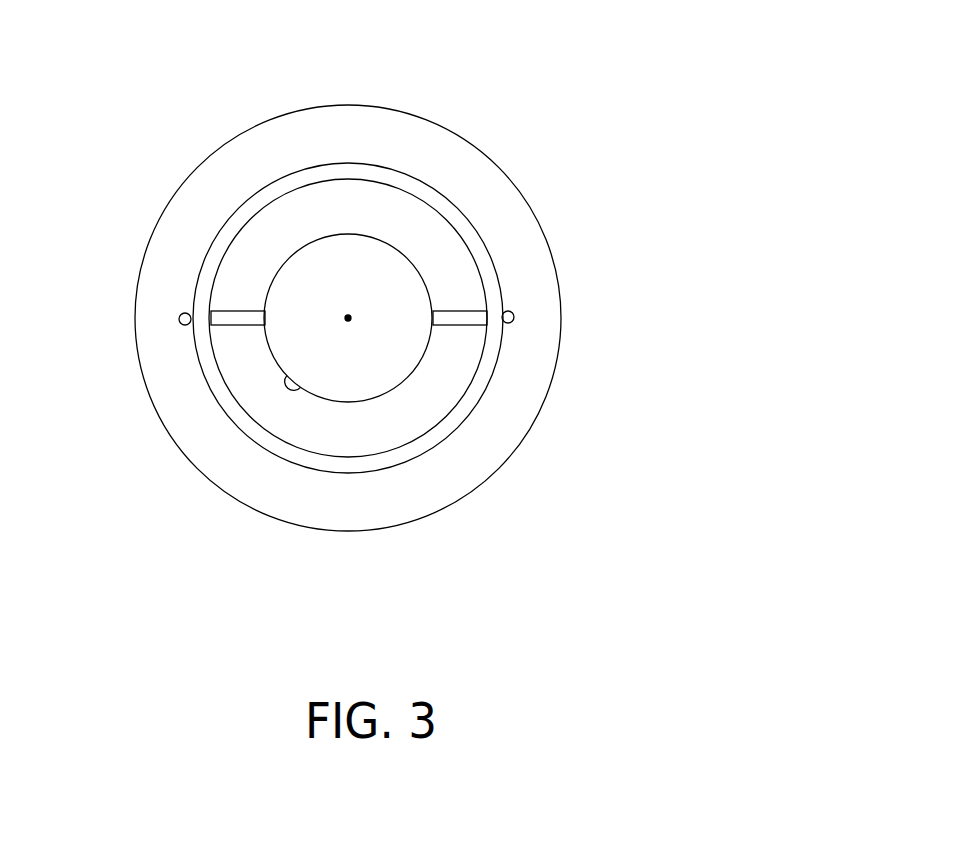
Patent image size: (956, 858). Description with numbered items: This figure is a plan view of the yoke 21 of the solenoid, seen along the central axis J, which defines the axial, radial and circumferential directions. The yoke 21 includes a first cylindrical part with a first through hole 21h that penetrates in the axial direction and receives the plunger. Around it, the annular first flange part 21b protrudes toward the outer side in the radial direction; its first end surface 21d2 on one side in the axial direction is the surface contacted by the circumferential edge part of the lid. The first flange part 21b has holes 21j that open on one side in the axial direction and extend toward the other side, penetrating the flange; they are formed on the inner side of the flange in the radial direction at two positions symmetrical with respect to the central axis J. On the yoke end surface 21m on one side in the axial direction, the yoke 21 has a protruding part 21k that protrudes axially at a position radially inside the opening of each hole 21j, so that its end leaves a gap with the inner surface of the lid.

The yoke 21 is at (526, 100).
The first flange part 21b is at (557, 257).
The first end surface 21d2 is at (525, 395).
The yoke end surface 21m is at (410, 418).
The protruding part 21k is at (228, 315).
The holes 21j is at (181, 323).
The first through hole 21h is at (300, 388).
The central axis J is at (348, 321).